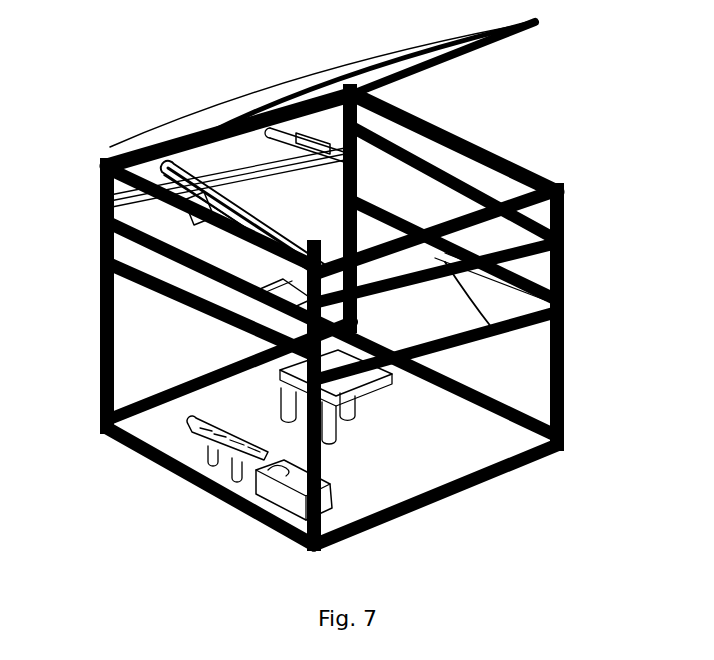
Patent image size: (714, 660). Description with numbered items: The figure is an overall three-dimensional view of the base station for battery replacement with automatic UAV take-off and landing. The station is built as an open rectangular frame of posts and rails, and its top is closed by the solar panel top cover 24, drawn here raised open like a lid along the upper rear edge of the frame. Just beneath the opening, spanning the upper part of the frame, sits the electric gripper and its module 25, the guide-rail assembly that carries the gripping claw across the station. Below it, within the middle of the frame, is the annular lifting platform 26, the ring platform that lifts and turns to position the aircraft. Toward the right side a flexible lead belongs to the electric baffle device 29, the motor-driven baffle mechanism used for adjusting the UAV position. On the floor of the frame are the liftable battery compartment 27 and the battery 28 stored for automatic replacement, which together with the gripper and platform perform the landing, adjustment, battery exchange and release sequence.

The solar panel top cover 24 is at (222, 113).
The electric gripper and its module 25 is at (196, 204).
The annular lifting platform 26 is at (240, 372).
The liftable battery compartment 27 is at (198, 440).
The battery 28 is at (266, 500).
The electric baffle device 29 is at (480, 308).